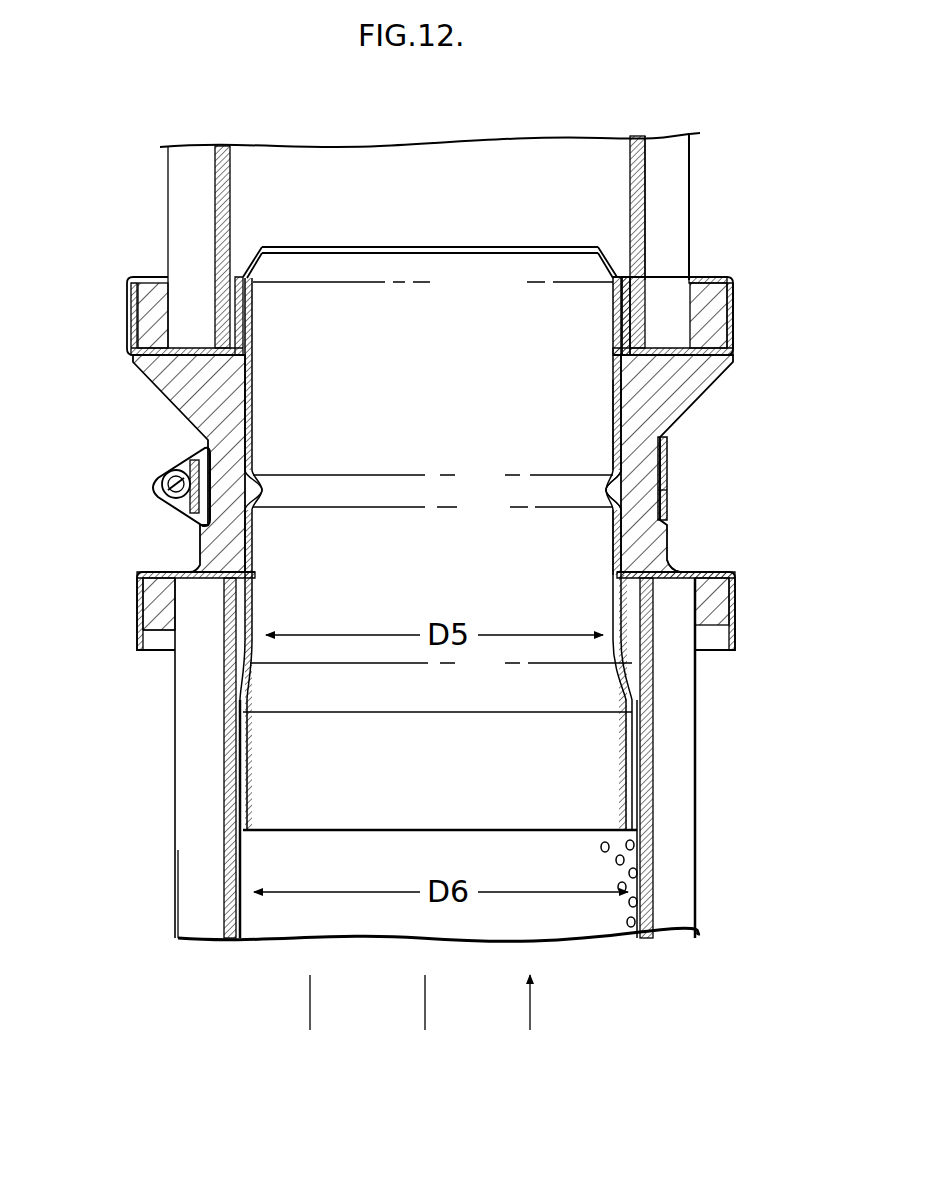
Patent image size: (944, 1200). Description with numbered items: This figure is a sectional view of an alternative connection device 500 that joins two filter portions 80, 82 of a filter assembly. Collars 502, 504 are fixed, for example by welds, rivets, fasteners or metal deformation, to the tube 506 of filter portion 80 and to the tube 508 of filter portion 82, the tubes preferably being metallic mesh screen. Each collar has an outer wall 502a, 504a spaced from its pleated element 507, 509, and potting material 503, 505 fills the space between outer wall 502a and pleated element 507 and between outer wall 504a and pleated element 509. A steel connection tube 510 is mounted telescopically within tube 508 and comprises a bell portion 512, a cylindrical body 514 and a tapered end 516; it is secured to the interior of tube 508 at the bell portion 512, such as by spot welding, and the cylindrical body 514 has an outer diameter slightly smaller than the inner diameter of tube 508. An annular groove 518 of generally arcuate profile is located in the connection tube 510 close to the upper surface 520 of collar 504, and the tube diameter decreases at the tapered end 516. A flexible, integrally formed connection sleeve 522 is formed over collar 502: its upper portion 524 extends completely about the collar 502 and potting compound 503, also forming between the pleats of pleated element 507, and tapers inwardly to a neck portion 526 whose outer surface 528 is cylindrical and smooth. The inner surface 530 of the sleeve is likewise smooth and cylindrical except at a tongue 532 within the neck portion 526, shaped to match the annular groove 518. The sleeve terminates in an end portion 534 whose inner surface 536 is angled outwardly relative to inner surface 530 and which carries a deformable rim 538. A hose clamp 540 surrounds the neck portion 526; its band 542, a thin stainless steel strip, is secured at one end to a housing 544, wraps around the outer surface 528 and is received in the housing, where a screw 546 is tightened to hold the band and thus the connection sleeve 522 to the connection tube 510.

The filter portion 80 is at (700, 155).
The filter portion 82 is at (170, 848).
The connection device 500 is at (97, 419).
The collar 502 is at (742, 283).
The outer wall 502a is at (738, 312).
The potting material 503 is at (710, 276).
The collar 504 is at (130, 597).
The outer wall 504a is at (738, 598).
The potting material 505 is at (140, 620).
The tube 506 is at (215, 190).
The pleated element 507 is at (680, 195).
The tube 508 is at (655, 748).
The pleated element 509 is at (190, 712).
The connection tube 510 is at (240, 376).
The bell portion 512 is at (255, 834).
The cylindrical body 514 is at (262, 616).
The tapered end 516 is at (259, 246).
The annular groove 518 is at (254, 460).
The upper surface 520 is at (733, 575).
The connection sleeve 522 is at (125, 376).
The upper portion 524 is at (735, 359).
The neck portion 526 is at (613, 453).
The outer surface 528 is at (667, 472).
The inner surface 530 is at (615, 376).
The tongue 532 is at (668, 512).
The end portion 534 is at (612, 520).
The inner surface 536 is at (617, 562).
The deformable rim 538 is at (676, 570).
The hose clamp 540 is at (680, 445).
The band 542 is at (670, 490).
The housing 544 is at (153, 500).
The screw 546 is at (160, 472).